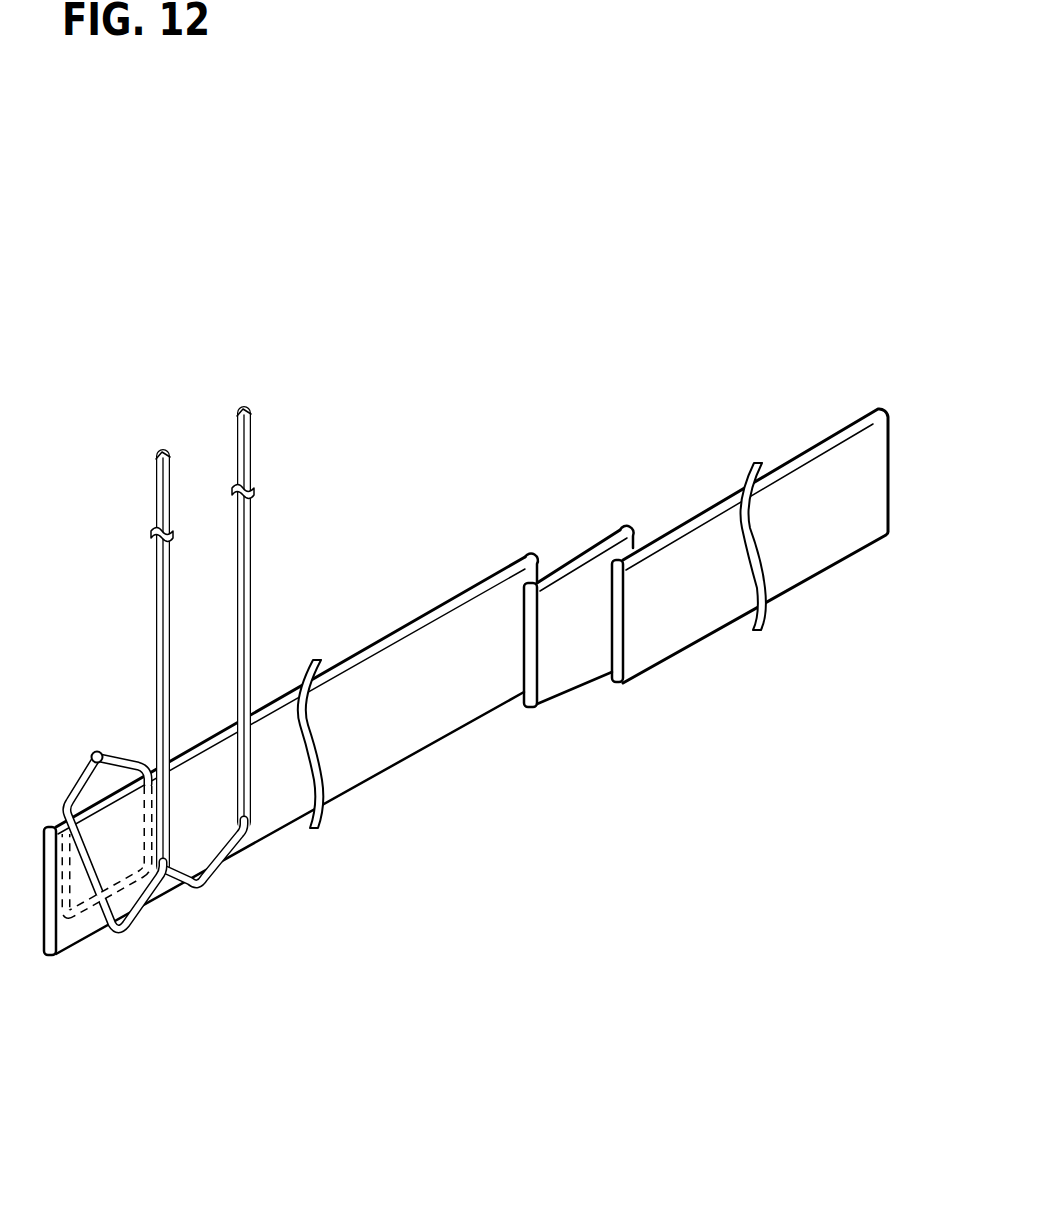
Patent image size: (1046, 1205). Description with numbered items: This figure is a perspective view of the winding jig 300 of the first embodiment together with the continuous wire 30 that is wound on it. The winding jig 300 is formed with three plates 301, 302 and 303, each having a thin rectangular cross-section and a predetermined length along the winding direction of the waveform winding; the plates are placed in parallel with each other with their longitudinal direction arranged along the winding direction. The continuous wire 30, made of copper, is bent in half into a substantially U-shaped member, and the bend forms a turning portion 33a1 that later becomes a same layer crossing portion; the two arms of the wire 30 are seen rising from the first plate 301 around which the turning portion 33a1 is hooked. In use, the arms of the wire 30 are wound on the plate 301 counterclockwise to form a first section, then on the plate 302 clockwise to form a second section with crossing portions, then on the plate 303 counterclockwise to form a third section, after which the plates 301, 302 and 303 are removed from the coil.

The continuous wire 30 is at (265, 531).
The turning portion 33a1 is at (96, 750).
The winding jig 300 is at (466, 666).
The first plate 301 is at (492, 575).
The second plate 302 is at (608, 540).
The third plate 303 is at (750, 546).